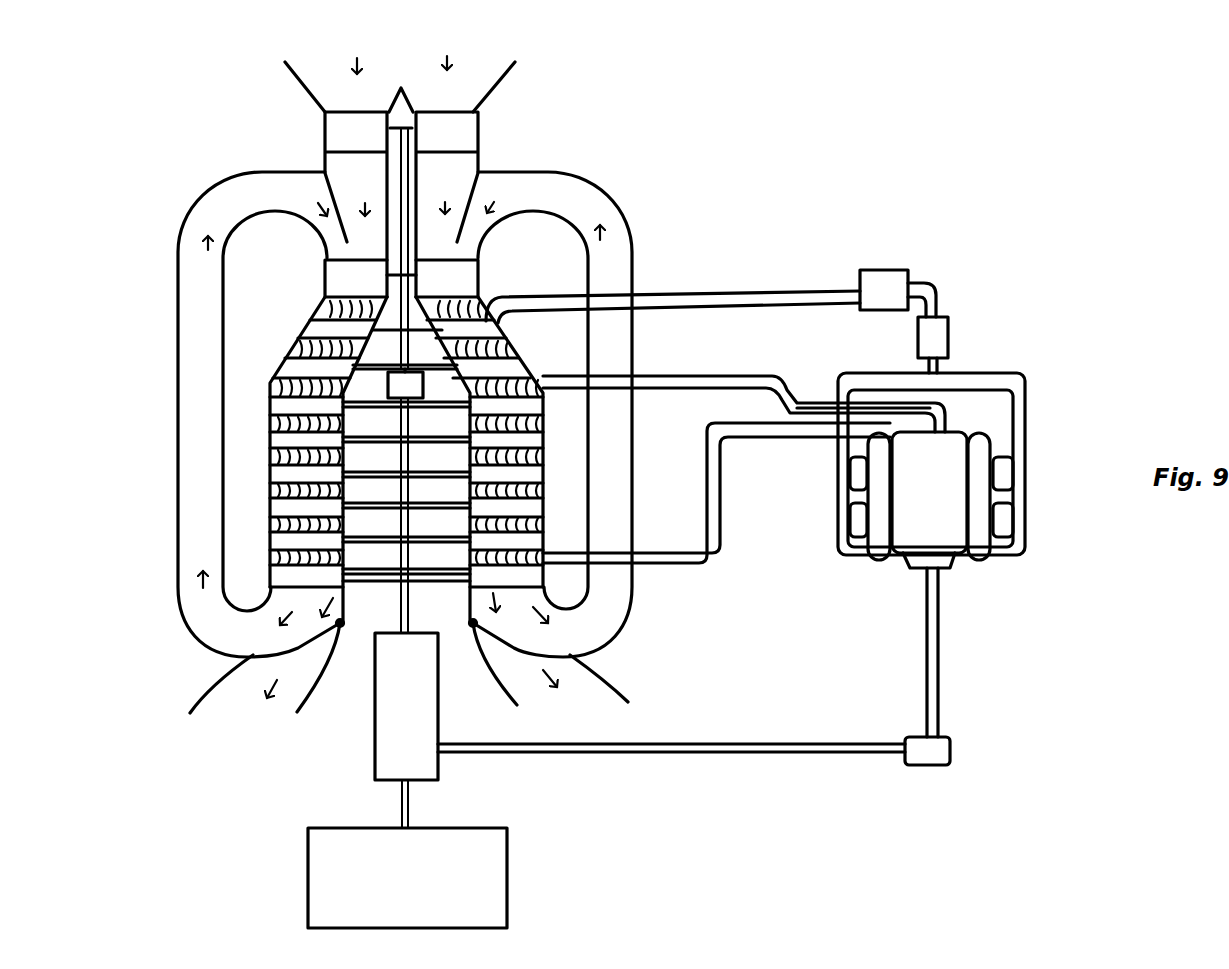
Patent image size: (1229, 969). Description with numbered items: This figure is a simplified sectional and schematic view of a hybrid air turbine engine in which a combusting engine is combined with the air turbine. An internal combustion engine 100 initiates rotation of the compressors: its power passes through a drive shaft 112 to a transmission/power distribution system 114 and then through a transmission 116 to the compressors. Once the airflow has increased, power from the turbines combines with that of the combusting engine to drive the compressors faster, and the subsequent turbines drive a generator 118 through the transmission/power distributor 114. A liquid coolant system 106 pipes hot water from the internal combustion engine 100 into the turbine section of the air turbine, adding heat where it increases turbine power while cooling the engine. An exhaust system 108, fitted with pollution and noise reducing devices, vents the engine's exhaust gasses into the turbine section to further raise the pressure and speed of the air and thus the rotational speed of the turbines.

The internal combustion engine 100 is at (1022, 383).
The liquid coolant system 106 is at (803, 405).
The exhaust system 108 is at (948, 315).
The drive shaft 112 is at (950, 749).
The transmission/power distribution system 114 is at (373, 748).
The transmission 116 is at (423, 383).
The generator 118 is at (507, 895).